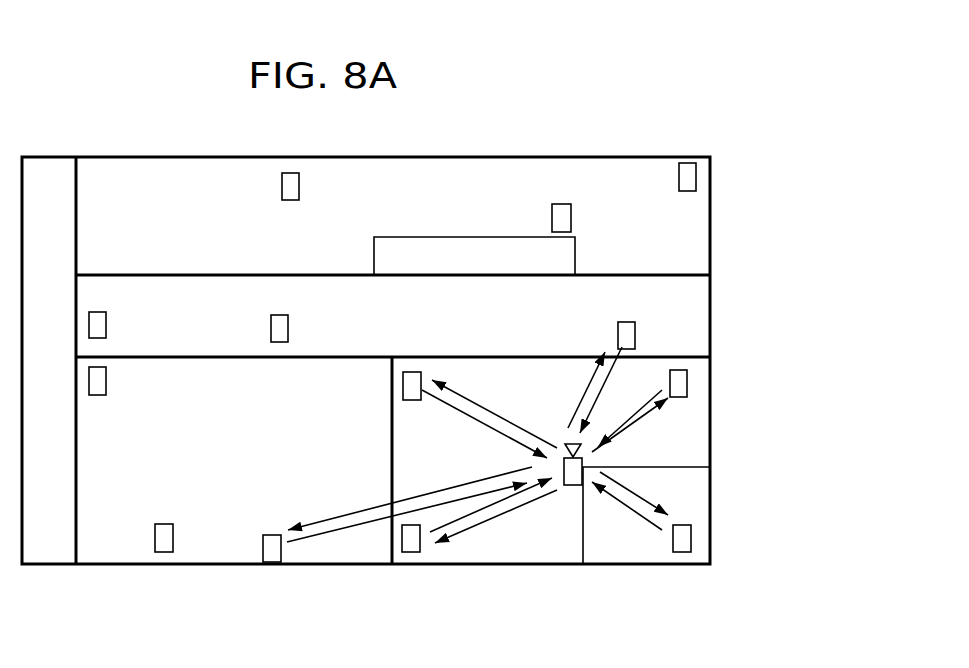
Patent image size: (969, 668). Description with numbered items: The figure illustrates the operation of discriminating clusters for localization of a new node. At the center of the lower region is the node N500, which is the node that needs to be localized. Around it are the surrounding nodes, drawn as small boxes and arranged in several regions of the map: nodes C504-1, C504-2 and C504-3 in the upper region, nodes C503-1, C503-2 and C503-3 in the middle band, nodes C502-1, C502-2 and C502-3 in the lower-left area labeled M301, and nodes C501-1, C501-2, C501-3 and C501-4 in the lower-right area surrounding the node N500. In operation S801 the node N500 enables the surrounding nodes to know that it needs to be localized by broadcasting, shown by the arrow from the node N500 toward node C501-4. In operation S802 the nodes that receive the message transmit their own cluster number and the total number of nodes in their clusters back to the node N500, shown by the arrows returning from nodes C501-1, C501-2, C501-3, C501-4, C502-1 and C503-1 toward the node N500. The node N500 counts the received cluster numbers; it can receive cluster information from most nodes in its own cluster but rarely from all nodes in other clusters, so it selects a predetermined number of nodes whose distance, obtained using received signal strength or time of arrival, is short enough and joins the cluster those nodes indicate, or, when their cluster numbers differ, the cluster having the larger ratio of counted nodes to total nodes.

The client device C504-1 is at (234, 182).
The client device C504-2 is at (512, 204).
The client device C504-3 is at (686, 162).
The client device C503-1 is at (627, 322).
The client device C503-2 is at (284, 314).
The client device C503-3 is at (106, 299).
The client device C502-1 is at (272, 535).
The client device C502-2 is at (165, 524).
The client device C502-3 is at (100, 395).
The client device C501-1 is at (680, 397).
The client device C501-2 is at (683, 525).
The client device C501-3 is at (412, 552).
The client device C501-4 is at (413, 372).
The node N500 is at (584, 459).
The region / area M301 is at (234, 460).
The operation S801 is at (512, 404).
The operation S802 is at (499, 432).